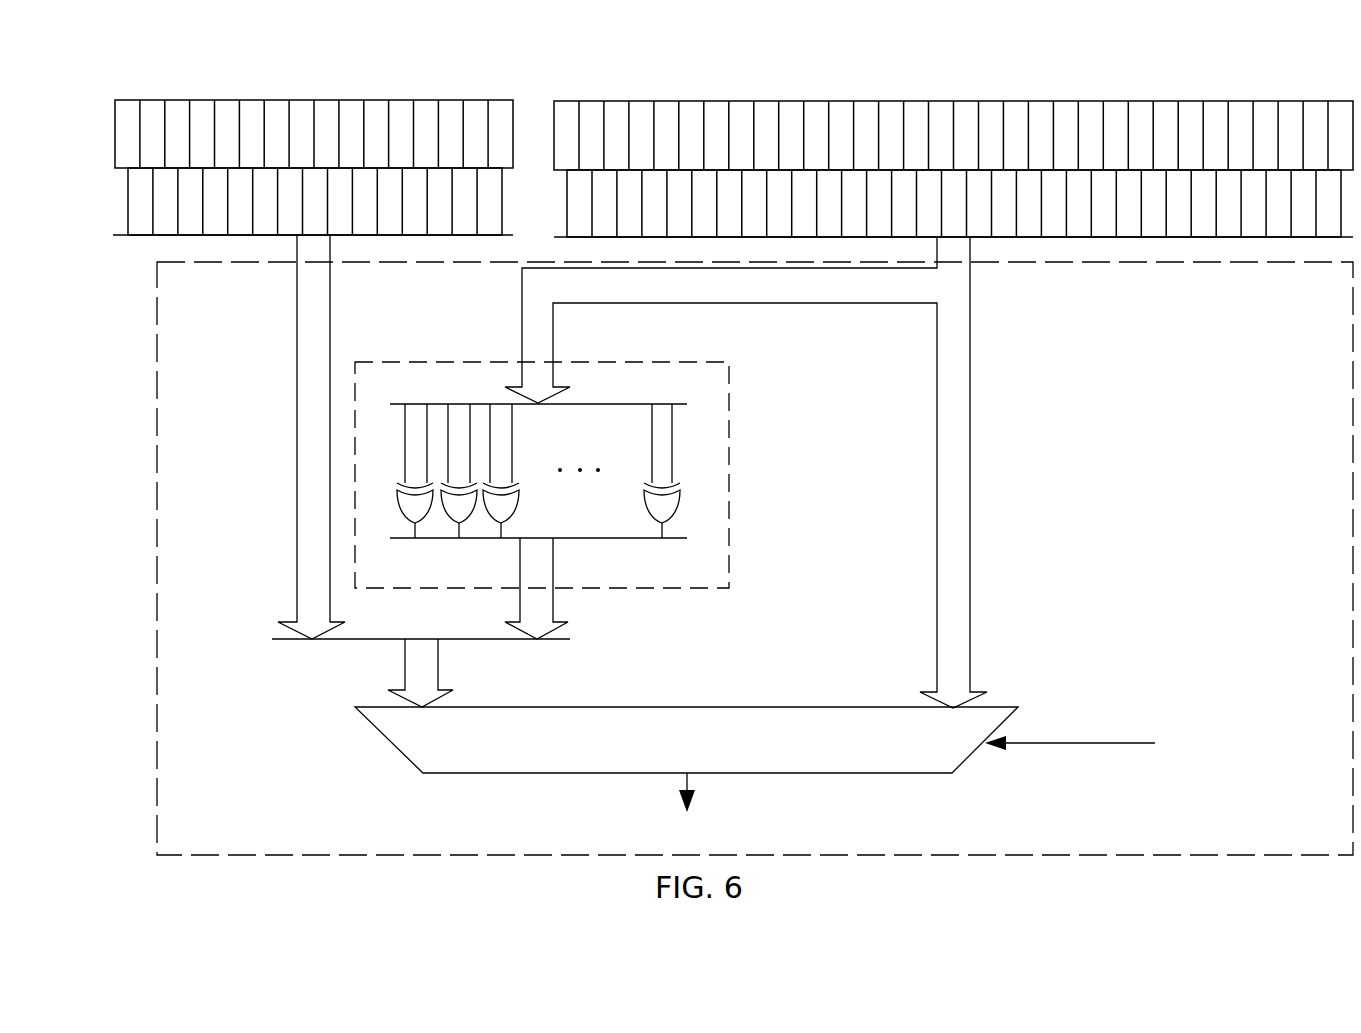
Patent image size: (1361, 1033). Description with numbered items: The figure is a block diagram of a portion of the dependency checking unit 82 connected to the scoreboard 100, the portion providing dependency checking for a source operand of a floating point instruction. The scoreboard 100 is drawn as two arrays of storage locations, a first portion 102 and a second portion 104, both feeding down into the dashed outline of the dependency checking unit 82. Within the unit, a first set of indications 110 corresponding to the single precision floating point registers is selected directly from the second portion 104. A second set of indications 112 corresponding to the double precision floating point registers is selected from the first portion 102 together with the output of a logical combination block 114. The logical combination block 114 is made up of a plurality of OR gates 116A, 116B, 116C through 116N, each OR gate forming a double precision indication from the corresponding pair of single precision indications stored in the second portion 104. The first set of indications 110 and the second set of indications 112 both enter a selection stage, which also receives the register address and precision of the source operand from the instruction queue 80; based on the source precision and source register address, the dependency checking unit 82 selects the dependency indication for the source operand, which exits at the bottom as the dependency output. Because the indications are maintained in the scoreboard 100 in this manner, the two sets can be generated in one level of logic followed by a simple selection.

The scoreboard 100 is at (764, 60).
The first portion 102 is at (315, 100).
The second portion 104 is at (955, 102).
The dependency checking unit 82 is at (1333, 309).
The first set of indications 110 is at (970, 665).
The second set of indications 112 is at (440, 672).
The logical combination block 114 is at (730, 470).
The OR gate 116A is at (400, 483).
The OR gate 116B is at (458, 523).
The OR gate 116C is at (513, 503).
The OR gate 116N is at (678, 505).
The instruction queue 80 is at (1130, 753).